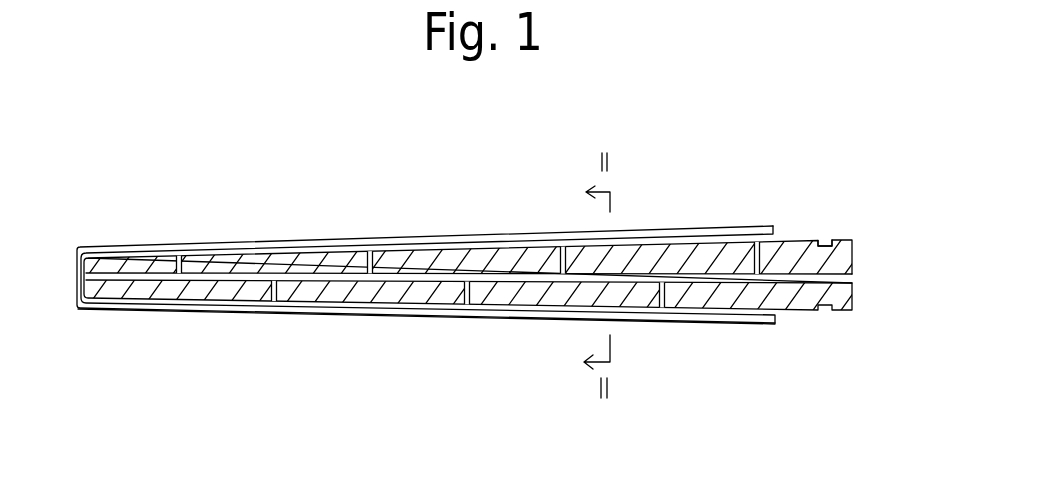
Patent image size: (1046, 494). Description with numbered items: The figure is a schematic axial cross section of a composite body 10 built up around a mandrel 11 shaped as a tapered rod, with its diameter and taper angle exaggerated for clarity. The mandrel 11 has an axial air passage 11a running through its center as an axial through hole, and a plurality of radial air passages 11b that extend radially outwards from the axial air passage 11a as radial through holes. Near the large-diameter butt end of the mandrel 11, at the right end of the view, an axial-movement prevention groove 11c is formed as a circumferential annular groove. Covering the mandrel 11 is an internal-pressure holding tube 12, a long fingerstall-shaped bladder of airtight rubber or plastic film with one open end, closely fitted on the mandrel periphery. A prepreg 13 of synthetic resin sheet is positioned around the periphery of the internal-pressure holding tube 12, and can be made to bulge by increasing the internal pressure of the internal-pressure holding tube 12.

The composite body 10 is at (739, 178).
The mandrel 11 is at (867, 232).
The axial air passage 11a is at (838, 280).
The radial air passages 11b is at (367, 256).
The axial-movement prevention groove 11c is at (826, 239).
The internal-pressure holding tube 12 is at (78, 277).
The prepreg 13 is at (253, 309).